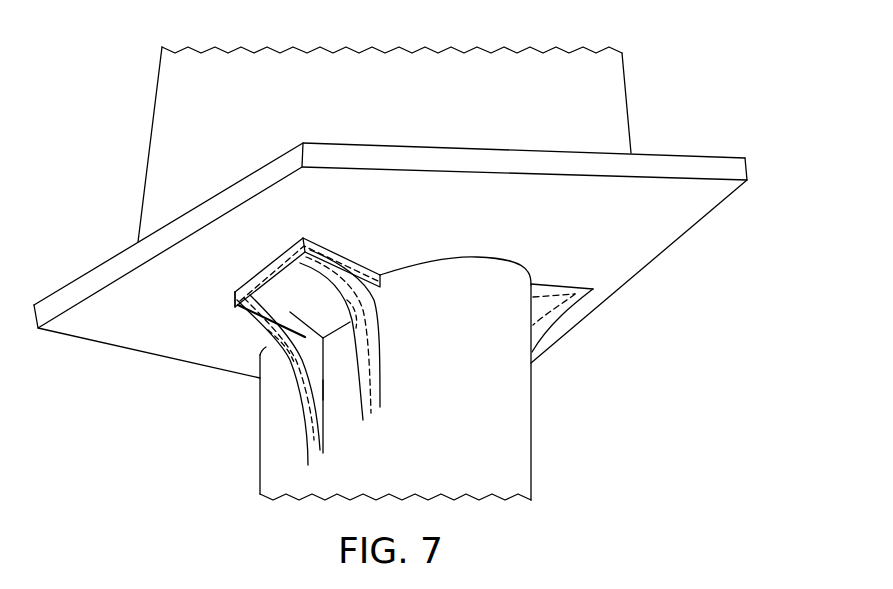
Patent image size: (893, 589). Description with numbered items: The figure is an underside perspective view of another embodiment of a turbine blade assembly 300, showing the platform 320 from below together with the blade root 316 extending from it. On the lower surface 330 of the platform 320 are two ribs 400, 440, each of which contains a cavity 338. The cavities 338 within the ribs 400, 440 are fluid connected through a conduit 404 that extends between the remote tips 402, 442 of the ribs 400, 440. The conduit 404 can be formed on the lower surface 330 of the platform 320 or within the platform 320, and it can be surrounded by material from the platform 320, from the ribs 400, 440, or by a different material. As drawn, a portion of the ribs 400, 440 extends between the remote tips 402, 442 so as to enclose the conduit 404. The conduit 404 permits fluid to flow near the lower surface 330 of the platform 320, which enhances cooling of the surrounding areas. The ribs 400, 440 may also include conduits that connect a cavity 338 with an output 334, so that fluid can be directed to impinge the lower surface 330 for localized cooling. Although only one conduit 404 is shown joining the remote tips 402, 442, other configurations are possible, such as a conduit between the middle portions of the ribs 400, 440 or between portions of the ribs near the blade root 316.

The turbine blade assembly 300 is at (731, 50).
The blade root 316 is at (517, 420).
The platform 320 is at (714, 210).
The lower surface 330 is at (648, 233).
The output 334 is at (310, 367).
The cavity 338 is at (372, 300).
The rib 400 is at (367, 267).
The remote tip 402 is at (330, 223).
The conduit 404 is at (265, 271).
The rib 440 is at (255, 325).
The remote tip 442 is at (235, 298).